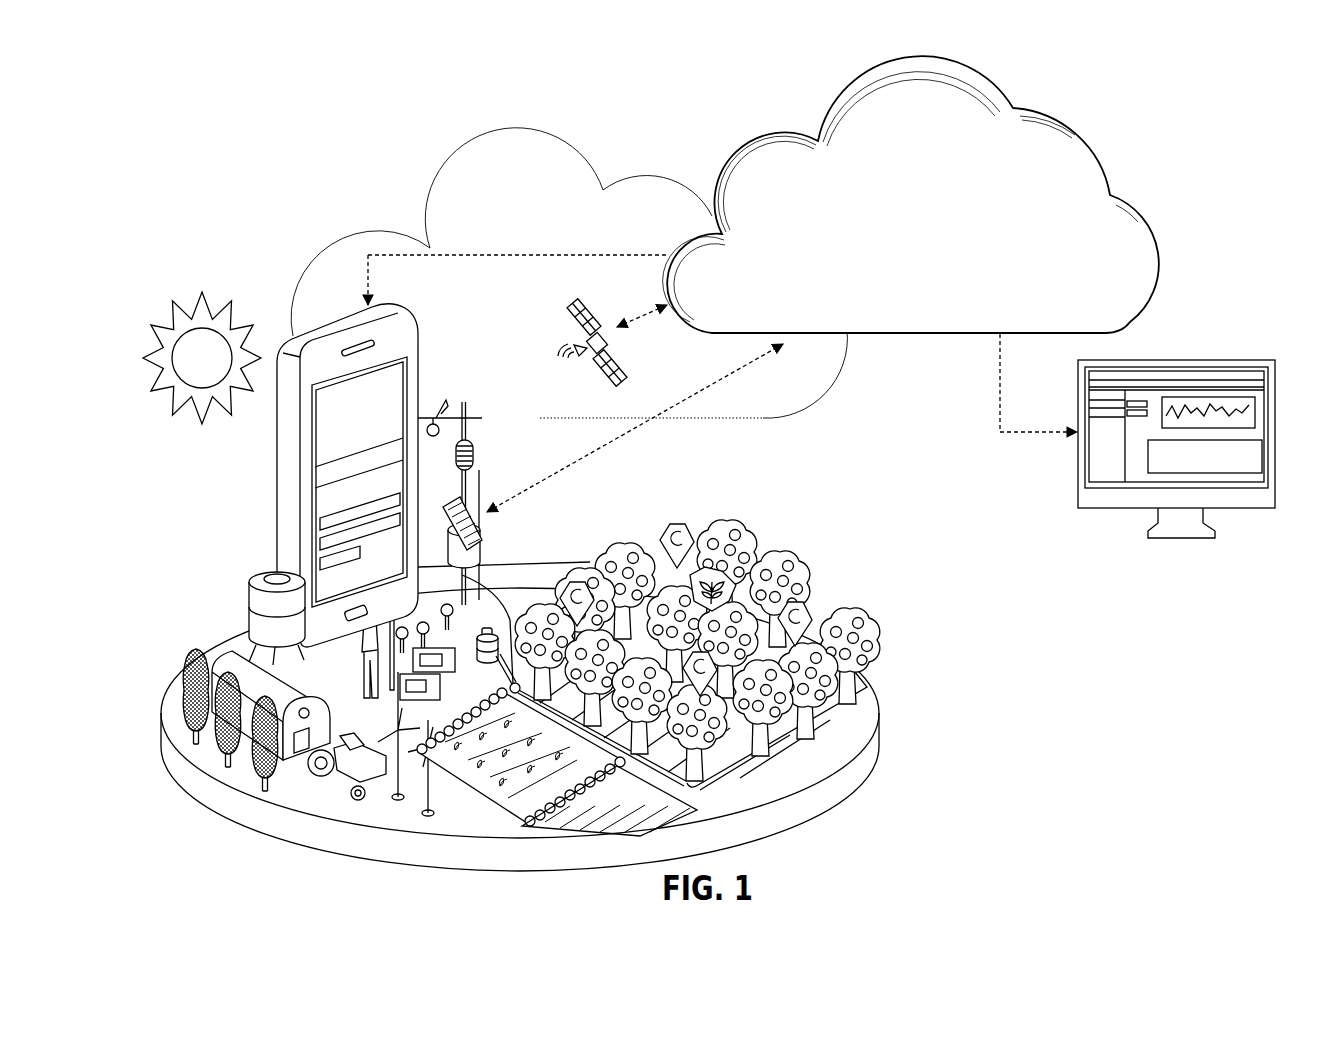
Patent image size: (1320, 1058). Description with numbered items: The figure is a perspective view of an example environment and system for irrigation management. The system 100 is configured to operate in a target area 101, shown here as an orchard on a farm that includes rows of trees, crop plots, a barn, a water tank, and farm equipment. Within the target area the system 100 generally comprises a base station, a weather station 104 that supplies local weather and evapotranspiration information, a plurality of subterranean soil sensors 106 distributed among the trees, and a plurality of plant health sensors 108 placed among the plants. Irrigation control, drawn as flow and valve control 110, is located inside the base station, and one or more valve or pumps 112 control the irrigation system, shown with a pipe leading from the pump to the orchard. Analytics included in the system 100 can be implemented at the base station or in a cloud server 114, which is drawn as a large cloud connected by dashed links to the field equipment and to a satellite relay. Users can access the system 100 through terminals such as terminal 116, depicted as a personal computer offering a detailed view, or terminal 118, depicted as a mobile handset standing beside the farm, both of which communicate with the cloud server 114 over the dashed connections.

The system 100 is at (1181, 188).
The target area 101 is at (909, 599).
The weather station 104 is at (479, 405).
The subterranean soil sensors 106 is at (895, 653).
The plant health sensors 108 is at (720, 578).
The irrigation control (flow and valve control) 110 is at (513, 503).
The valve or pumps 112 is at (468, 630).
The cloud server 114 is at (929, 307).
The terminal 116 is at (1200, 360).
The terminal 118 is at (326, 327).